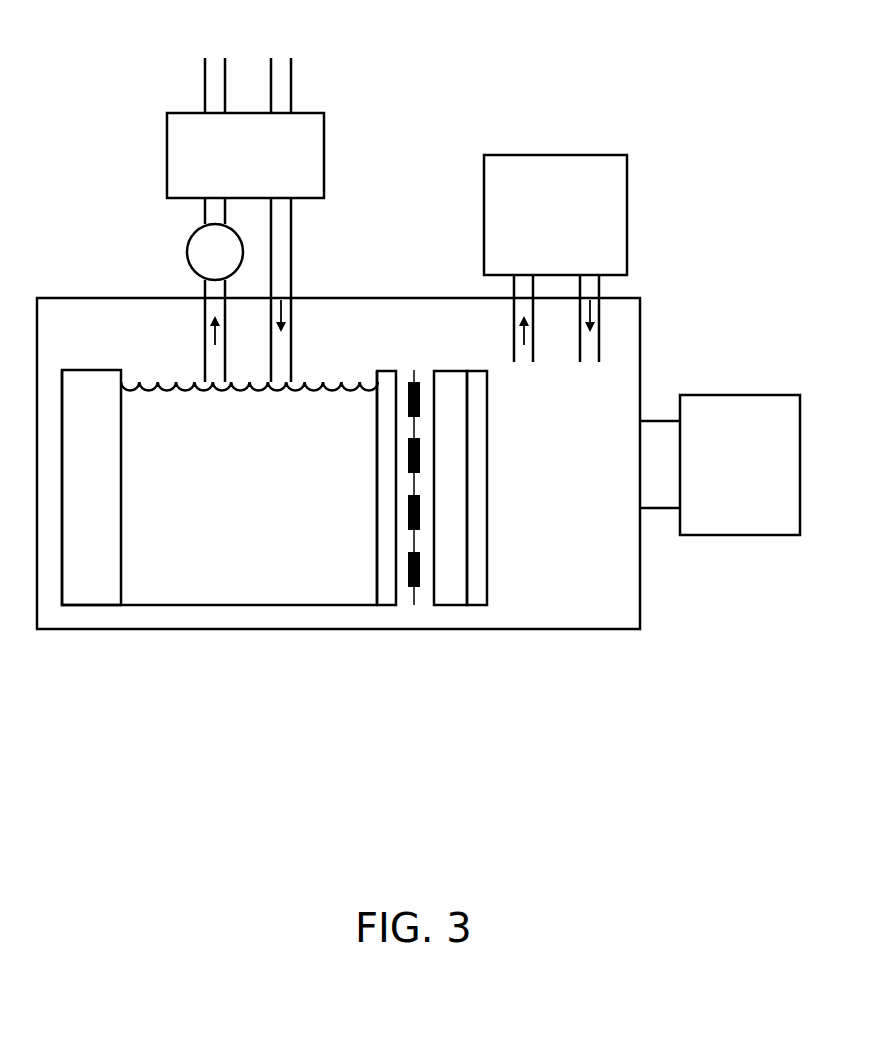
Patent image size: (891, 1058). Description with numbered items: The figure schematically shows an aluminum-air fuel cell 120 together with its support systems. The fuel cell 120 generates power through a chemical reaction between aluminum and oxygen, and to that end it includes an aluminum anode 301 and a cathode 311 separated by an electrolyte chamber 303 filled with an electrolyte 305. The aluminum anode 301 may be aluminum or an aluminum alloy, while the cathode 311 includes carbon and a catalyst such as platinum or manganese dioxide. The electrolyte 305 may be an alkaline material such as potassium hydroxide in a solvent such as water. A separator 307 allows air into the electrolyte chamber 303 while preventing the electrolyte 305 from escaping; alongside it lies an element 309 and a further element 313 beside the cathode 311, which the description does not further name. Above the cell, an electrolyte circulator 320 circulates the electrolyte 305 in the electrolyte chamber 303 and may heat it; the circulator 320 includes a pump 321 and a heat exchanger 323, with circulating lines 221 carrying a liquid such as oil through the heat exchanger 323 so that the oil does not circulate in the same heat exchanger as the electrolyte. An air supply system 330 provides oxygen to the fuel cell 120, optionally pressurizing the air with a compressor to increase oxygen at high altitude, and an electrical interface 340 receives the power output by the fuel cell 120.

The aluminum-air fuel cell 120 is at (112, 690).
The circulating lines 221 is at (291, 72).
The aluminum anode 301 is at (83, 606).
The electrolyte chamber 303 is at (160, 606).
The electrolyte 305 is at (246, 583).
The separator 307 is at (385, 606).
The heating element 309 is at (412, 596).
The cathode 311 is at (447, 606).
The fourth wall panel 313 is at (488, 606).
The electrolyte circulator 320 is at (92, 206).
The pump 321 is at (192, 238).
The heat exchanger 323 is at (166, 126).
The air supply system 330 is at (628, 190).
The electrical interface 340 is at (801, 414).